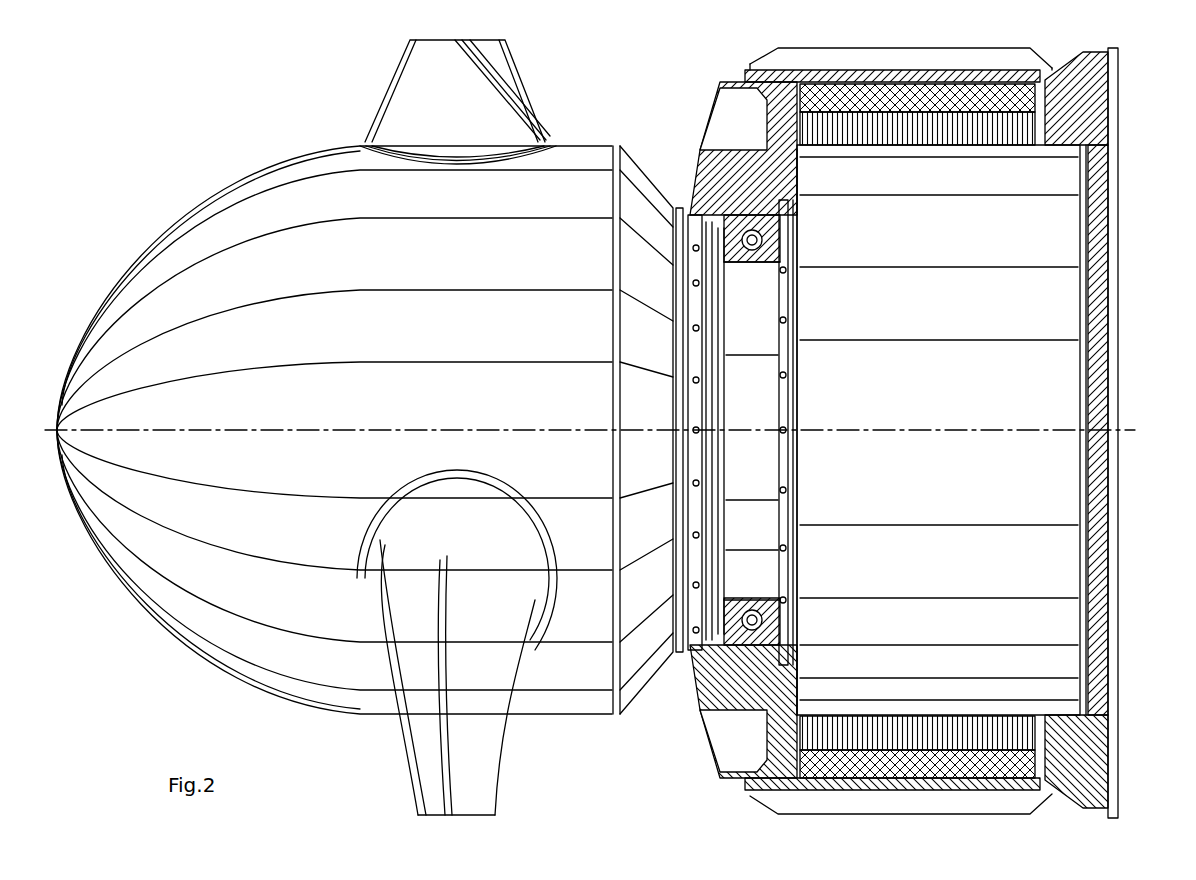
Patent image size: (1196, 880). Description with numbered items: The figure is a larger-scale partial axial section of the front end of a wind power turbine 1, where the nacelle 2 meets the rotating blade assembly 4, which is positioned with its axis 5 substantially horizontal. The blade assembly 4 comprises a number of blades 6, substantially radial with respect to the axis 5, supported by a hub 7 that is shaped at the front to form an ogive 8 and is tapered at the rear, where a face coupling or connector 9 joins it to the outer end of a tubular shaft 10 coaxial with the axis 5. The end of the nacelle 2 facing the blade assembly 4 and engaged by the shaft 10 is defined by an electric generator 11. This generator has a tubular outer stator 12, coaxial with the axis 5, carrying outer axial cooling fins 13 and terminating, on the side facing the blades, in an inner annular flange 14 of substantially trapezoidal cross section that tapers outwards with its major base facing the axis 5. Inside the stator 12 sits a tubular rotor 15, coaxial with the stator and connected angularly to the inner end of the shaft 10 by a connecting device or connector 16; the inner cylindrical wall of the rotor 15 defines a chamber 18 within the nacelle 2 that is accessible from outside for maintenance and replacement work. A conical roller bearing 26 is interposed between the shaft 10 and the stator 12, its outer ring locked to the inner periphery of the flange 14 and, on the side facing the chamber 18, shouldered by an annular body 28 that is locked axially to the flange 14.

The wind power turbine 1 is at (614, 112).
The nacelle 2 is at (1058, 60).
The blade assembly 4 is at (232, 162).
The axis 5 is at (1052, 430).
The blades 6 is at (425, 92).
The hub 7 is at (640, 672).
The ogive 8 is at (188, 245).
The face coupling or connector 9 is at (728, 480).
The tubular shaft 10 is at (745, 536).
The electric generator 11 is at (948, 50).
The tubular outer stator 12 is at (906, 70).
The outer axial cooling fins 13 is at (793, 55).
The inner annular flange 14 is at (739, 80).
The tubular rotor 15 is at (916, 140).
The connecting device or connector 16 is at (798, 420).
The chamber 18 is at (1047, 146).
The conical roller bearing 26 is at (778, 258).
The annular body 28 is at (780, 234).